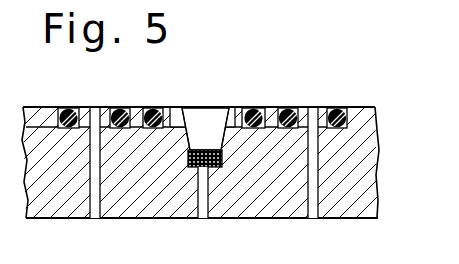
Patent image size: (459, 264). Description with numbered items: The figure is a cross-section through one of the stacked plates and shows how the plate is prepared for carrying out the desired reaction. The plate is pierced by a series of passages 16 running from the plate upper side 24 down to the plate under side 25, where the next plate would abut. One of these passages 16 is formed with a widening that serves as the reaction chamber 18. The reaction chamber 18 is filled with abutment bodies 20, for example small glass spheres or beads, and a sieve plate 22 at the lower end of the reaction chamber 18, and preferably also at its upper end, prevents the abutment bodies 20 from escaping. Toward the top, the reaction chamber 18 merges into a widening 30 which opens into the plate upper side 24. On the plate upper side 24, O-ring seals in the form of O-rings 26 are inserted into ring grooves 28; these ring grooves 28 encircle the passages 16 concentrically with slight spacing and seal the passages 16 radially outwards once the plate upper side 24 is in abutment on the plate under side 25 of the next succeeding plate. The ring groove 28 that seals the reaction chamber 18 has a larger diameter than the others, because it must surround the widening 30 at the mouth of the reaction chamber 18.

The passage 16 is at (98, 107).
The reaction chamber 18 is at (202, 135).
The abutment bodies 20 is at (187, 107).
The sieve plate 22 is at (213, 125).
The plate upper side 24 is at (361, 106).
The plate under side 25 is at (376, 218).
The O-rings 26 is at (122, 107).
The ring grooves 28 is at (329, 106).
The widening 30 is at (229, 110).